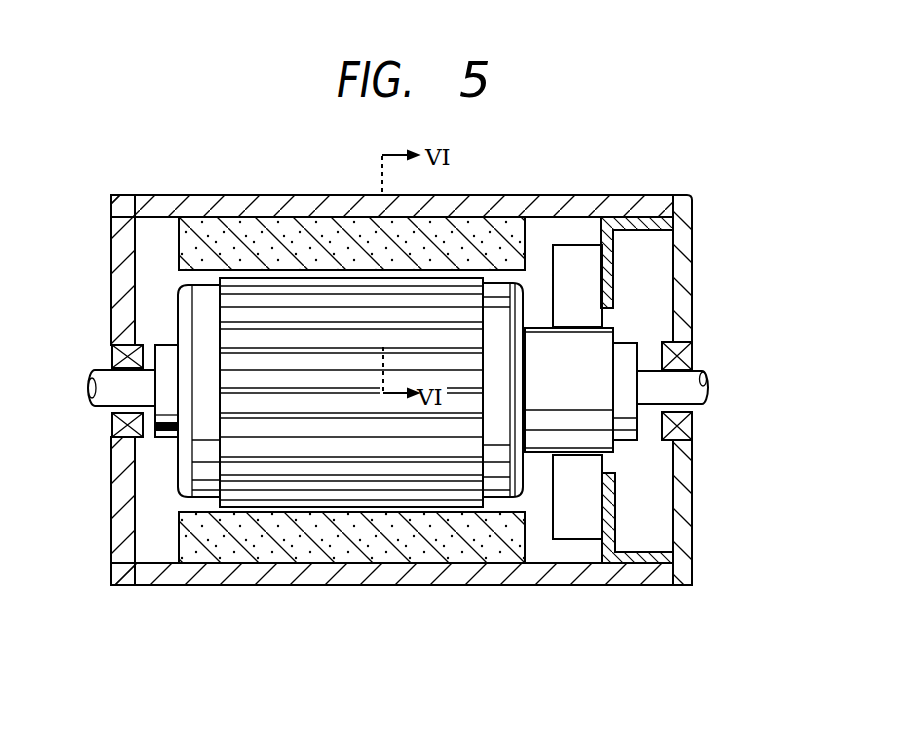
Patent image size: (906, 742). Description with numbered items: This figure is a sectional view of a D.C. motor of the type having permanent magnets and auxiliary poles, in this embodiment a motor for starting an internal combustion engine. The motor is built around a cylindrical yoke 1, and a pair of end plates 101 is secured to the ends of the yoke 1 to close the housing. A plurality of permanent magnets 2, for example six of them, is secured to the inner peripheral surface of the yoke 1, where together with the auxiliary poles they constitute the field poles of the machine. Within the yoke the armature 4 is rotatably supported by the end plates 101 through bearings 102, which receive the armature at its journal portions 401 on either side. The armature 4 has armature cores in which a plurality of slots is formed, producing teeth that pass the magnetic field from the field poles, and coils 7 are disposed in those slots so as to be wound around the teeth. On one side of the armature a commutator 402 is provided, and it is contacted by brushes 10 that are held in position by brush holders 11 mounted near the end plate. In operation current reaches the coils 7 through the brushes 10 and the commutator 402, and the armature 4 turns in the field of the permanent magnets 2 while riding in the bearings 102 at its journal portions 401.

The yoke 1 is at (260, 195).
The permanent magnet 2 is at (323, 232).
The armature 4 is at (428, 487).
The coils 7 is at (520, 495).
The brushes 10 is at (580, 540).
The brush holders 11 is at (638, 550).
The end plates 101 is at (683, 242).
The bearings 102 is at (687, 355).
The journal portions 401 is at (692, 390).
The commutator 402 is at (617, 330).